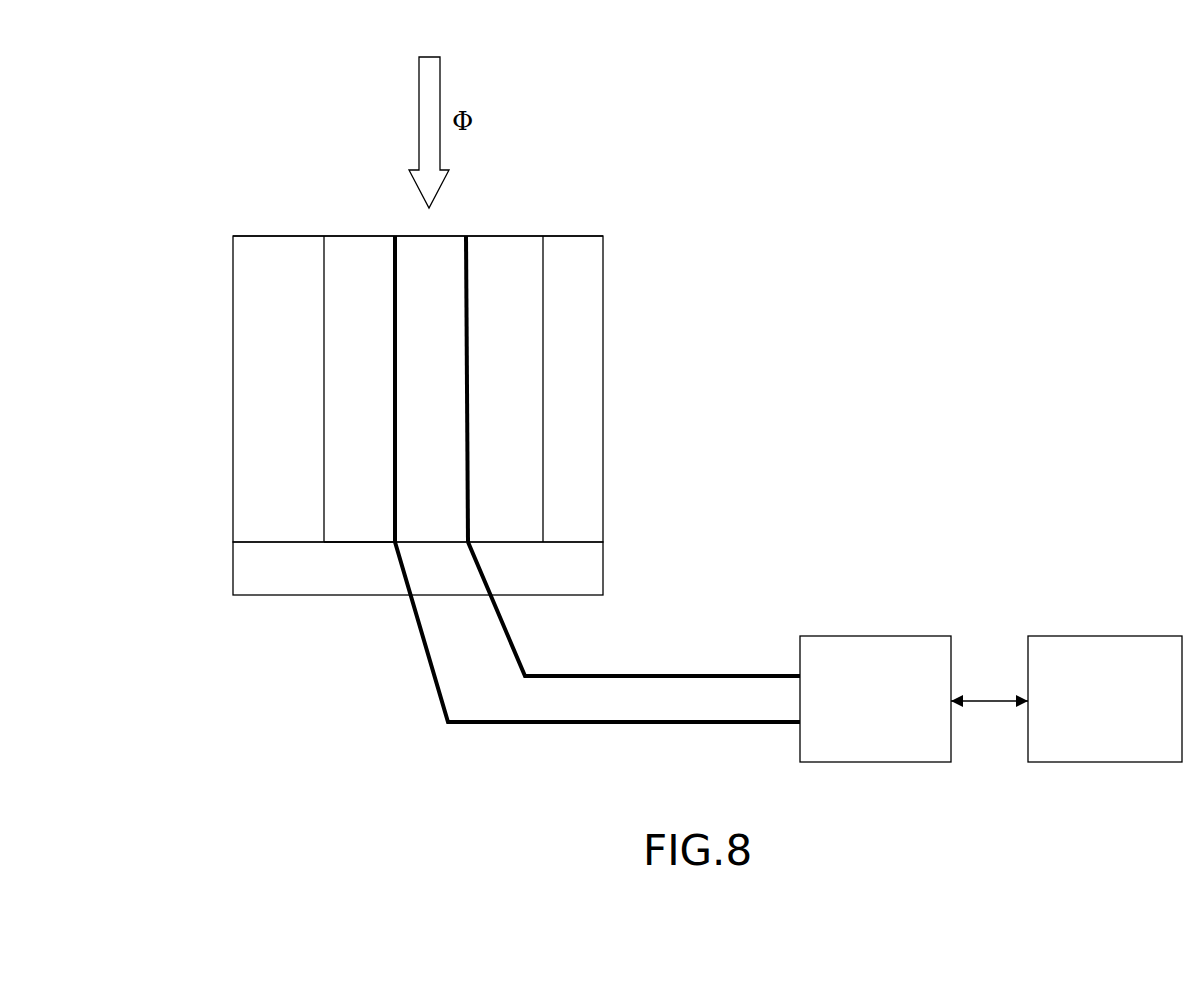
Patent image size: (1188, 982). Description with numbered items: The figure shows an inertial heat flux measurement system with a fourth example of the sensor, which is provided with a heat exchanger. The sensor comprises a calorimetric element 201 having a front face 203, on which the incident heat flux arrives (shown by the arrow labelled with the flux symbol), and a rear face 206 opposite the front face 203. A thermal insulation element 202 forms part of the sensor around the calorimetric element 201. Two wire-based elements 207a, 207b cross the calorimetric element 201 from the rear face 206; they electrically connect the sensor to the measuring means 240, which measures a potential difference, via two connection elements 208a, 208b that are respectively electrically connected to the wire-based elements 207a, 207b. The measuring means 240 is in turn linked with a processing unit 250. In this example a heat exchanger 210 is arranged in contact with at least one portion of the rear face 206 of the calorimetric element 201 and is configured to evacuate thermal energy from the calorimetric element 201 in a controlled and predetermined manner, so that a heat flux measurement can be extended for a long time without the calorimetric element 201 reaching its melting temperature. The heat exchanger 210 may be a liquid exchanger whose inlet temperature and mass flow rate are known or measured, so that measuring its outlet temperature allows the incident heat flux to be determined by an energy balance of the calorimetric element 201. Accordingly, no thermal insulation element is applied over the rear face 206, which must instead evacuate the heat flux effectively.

The calorimetric element 201 is at (543, 420).
The thermal insulation element 202 is at (603, 497).
The front face 203 is at (504, 234).
The rear face 206 is at (358, 545).
The wire-based element 207a is at (395, 380).
The wire-based element 207b is at (468, 380).
The connection element 208a is at (440, 700).
The connection element 208b is at (520, 642).
The heat exchanger 210 is at (603, 568).
The measuring means 240 is at (878, 635).
The processing unit 250 is at (1108, 635).